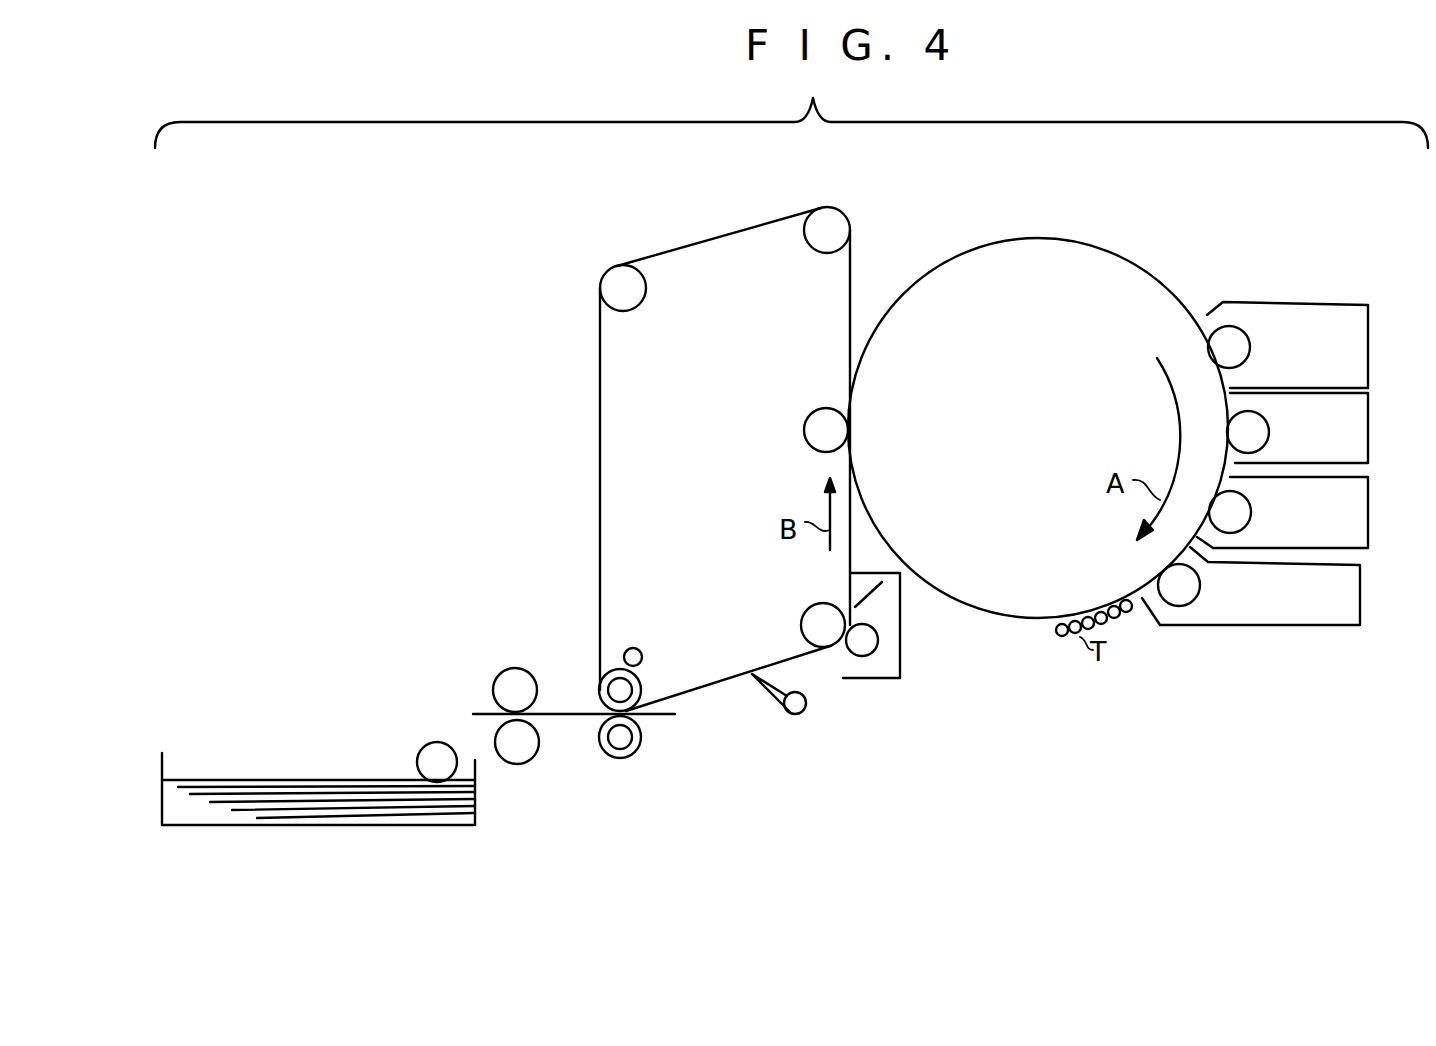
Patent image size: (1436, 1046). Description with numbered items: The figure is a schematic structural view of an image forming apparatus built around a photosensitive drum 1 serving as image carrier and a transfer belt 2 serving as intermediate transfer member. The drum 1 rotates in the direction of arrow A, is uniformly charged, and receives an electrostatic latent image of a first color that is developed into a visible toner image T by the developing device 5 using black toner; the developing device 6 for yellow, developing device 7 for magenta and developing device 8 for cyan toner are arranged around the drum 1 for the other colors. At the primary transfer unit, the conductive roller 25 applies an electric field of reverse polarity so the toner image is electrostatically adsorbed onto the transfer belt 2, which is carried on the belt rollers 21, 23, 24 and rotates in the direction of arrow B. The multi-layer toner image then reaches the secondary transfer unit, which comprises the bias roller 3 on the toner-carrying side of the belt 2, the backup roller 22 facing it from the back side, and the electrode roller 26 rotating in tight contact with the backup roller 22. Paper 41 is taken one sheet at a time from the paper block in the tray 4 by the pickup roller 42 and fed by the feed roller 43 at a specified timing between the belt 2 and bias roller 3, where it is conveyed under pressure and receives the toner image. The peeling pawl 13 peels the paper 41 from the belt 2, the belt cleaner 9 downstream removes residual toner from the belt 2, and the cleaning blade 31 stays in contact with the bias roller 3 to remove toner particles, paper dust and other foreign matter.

The photosensitive drum 1 is at (1153, 278).
The transfer belt 2 is at (600, 432).
The bias roller 3 is at (640, 748).
The tray 4 is at (383, 830).
The developing device 5 is at (1372, 352).
The developing device 6 is at (1372, 432).
The developing device 7 is at (1372, 510).
The developing device 8 is at (1365, 590).
The belt cleaner 9 is at (902, 642).
The peeling pawl 13 is at (808, 703).
The belt roller 21 is at (842, 211).
The backup roller 22 is at (608, 668).
The belt roller 23 is at (615, 267).
The belt roller 24 is at (810, 610).
The conductive roller 25 is at (808, 410).
The electrode roller 26 is at (643, 657).
The cleaning blade 31 is at (585, 733).
The paper 41 is at (302, 780).
The pickup roller 42 is at (435, 740).
The feed roller 43 is at (508, 740).